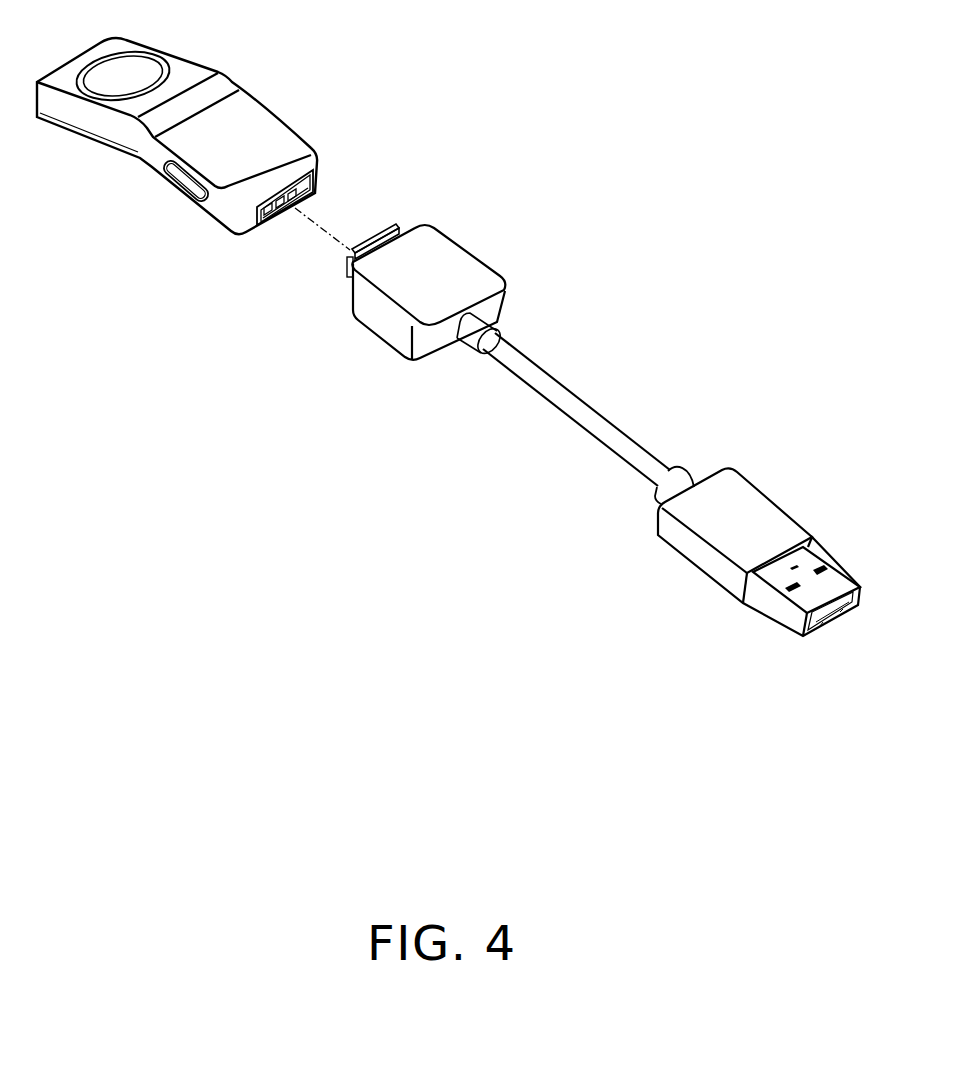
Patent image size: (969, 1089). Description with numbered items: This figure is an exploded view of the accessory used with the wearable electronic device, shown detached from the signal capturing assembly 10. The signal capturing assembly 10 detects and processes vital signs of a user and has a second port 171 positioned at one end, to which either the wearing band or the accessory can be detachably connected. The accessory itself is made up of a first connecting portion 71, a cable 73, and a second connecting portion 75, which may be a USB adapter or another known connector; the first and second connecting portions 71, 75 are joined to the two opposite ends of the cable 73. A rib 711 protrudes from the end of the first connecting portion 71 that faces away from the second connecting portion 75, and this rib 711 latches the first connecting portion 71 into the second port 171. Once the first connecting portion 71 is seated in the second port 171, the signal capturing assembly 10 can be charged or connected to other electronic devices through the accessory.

The signal capturing assembly 10 is at (182, 67).
The second port 171 is at (312, 202).
The first connecting portion 71 is at (445, 267).
The rib 711 is at (388, 227).
The cable 73 is at (567, 397).
The second connecting portion 75 is at (722, 503).